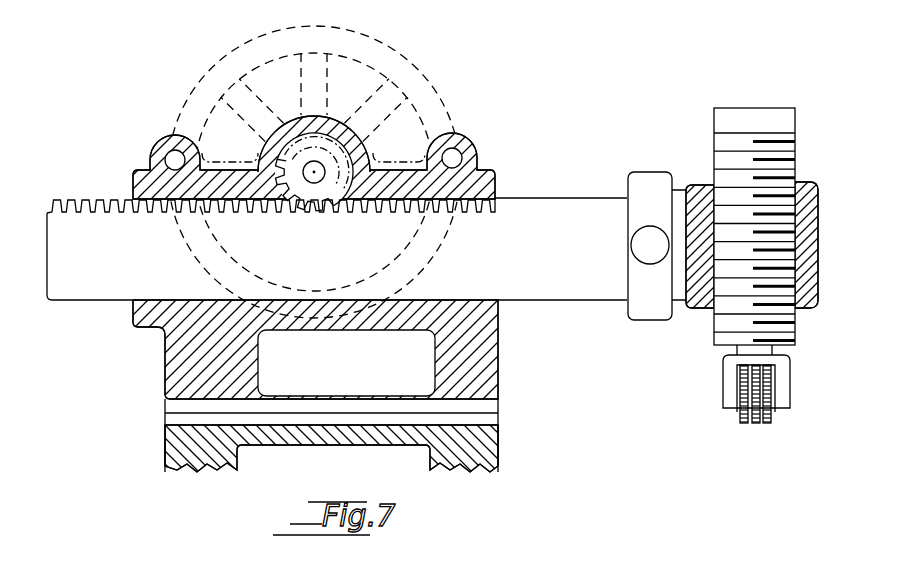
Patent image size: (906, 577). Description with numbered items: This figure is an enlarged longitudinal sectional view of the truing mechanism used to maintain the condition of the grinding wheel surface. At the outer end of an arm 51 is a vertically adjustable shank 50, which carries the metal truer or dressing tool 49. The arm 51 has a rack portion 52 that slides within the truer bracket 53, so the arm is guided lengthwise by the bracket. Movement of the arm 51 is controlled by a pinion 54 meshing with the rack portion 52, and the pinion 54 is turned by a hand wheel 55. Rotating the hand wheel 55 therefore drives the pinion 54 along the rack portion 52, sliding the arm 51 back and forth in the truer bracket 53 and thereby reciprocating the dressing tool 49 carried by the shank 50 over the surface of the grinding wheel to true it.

The dressing tool 49 is at (749, 412).
The vertically adjustable shank 50 is at (718, 172).
The arm 51 is at (547, 217).
The rack portion 52 is at (497, 197).
The truer bracket 53 is at (486, 360).
The pinion 54 is at (285, 171).
The hand wheel 55 is at (378, 65).